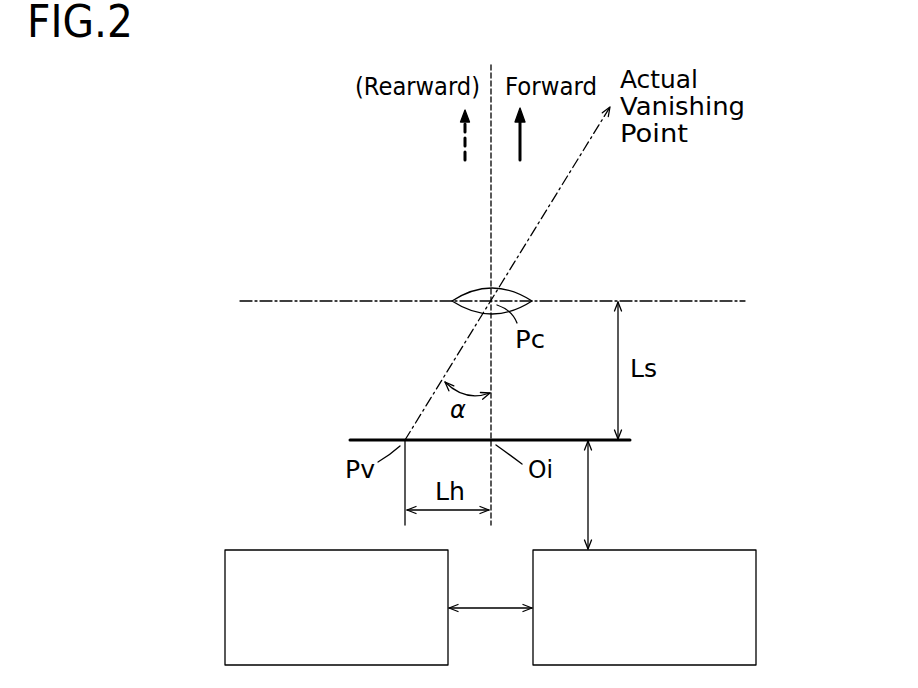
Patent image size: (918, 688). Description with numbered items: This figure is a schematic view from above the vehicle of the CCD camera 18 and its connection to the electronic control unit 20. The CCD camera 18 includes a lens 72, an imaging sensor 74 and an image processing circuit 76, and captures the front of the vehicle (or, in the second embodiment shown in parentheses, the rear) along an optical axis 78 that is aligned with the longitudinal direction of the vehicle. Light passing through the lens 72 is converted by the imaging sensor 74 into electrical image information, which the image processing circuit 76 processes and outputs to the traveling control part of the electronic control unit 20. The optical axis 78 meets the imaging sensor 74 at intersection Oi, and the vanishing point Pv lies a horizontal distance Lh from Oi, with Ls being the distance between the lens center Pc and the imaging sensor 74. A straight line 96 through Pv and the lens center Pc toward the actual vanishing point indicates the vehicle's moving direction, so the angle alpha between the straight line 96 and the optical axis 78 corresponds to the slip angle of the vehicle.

The CCD camera 18 is at (358, 160).
The electronic control unit 20 is at (225, 603).
The lens 72 is at (468, 290).
The imaging sensor 74 is at (370, 440).
The image processing circuit 76 is at (757, 608).
The optical axis 78 is at (491, 235).
The straight line 96 is at (555, 199).